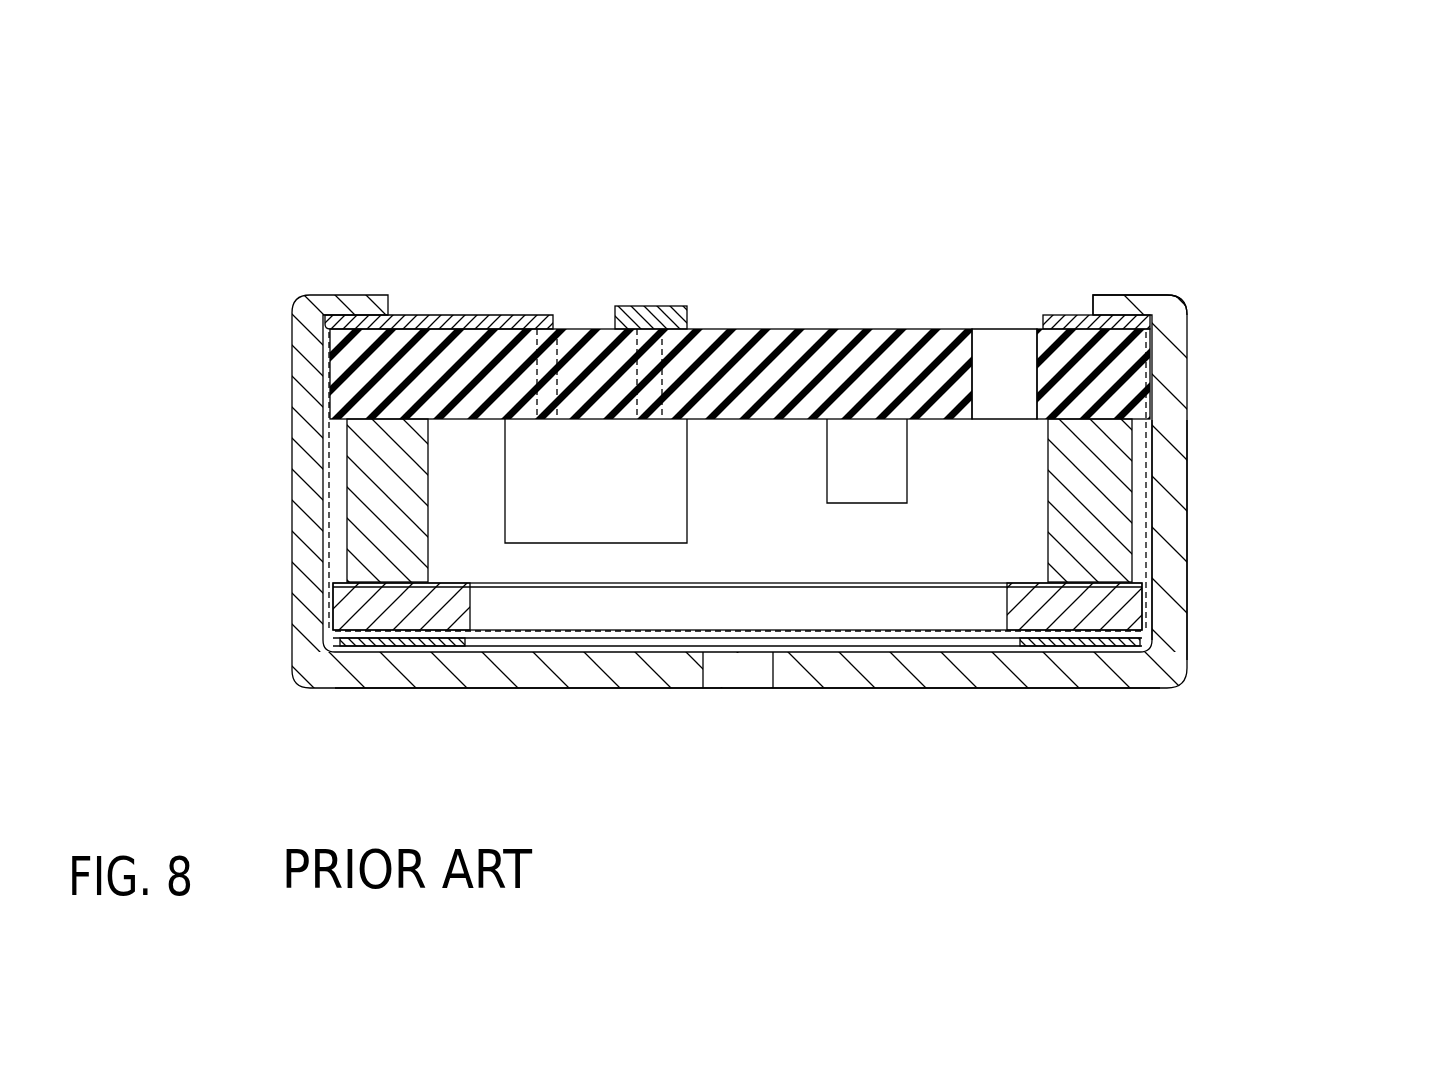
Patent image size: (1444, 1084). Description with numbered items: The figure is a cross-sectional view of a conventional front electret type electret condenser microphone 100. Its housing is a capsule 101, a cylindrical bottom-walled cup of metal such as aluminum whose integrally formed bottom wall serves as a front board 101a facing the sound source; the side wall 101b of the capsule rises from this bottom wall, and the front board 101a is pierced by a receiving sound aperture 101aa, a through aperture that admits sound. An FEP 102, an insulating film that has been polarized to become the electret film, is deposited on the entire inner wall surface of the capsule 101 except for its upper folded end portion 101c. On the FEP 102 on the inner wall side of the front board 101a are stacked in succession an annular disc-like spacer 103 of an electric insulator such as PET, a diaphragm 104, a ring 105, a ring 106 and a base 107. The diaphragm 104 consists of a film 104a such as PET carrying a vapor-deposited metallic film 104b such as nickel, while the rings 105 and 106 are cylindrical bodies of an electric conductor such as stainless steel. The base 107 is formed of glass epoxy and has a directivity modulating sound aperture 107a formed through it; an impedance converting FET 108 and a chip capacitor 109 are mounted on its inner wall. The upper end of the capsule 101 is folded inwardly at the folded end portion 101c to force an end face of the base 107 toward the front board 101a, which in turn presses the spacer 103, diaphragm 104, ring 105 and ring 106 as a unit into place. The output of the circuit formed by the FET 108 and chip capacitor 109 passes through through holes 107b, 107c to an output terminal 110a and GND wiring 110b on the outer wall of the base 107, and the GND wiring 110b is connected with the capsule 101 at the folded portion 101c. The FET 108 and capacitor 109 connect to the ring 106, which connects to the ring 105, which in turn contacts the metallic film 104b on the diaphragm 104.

The microphone 100 is at (1293, 278).
The capsule 101 is at (1187, 385).
The front board 101a is at (805, 680).
The receiving sound aperture 101aa is at (720, 680).
The side wall of case 101b is at (1172, 516).
The upper folded end portion 101c is at (1118, 303).
The FEP 102 is at (880, 652).
The spacer 103 is at (370, 648).
The diaphragm 104 is at (621, 525).
The film 104a is at (465, 628).
The vapor-deposited metallic film 104b is at (533, 632).
The ring 105 is at (1108, 612).
The ring 106 is at (1112, 480).
The base 107 is at (345, 352).
The directivity modulating sound aperture 107a is at (1002, 347).
The through hole 107b is at (652, 357).
The through hole 107c is at (513, 320).
The impedance converting FET 108 is at (593, 455).
The chip capacitor 109 is at (862, 447).
The output terminal 110a is at (661, 329).
The GND wiring 110b is at (452, 315).